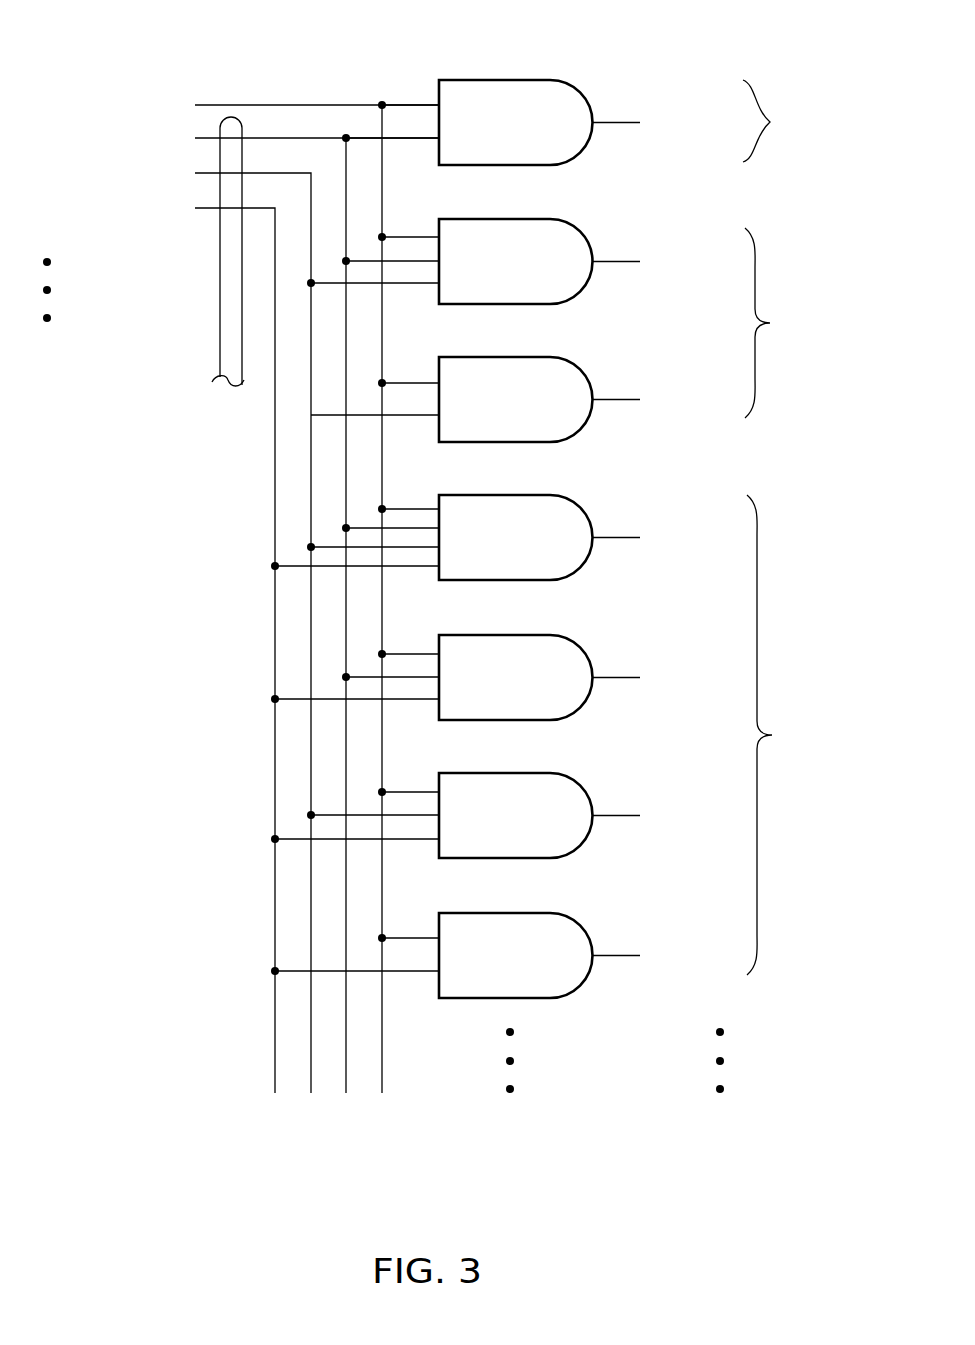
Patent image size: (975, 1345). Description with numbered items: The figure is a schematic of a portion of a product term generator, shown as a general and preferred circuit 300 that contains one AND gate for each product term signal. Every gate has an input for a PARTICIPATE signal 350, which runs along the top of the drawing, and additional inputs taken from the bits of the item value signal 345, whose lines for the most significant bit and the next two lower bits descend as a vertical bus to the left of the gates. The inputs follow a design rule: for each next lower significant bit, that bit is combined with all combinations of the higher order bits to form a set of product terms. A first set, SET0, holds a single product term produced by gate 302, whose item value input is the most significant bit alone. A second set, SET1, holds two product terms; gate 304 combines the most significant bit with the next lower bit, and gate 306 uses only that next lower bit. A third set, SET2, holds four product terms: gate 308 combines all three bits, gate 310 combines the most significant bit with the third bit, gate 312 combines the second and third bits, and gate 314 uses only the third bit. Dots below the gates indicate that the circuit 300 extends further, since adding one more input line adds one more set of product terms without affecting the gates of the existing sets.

The product term generator circuit 300 is at (198, 54).
The AND gate 302 is at (518, 129).
The AND gate 304 is at (518, 268).
The AND gate 306 is at (518, 406).
The AND gate 308 is at (518, 544).
The AND gate 310 is at (518, 684).
The AND gate 312 is at (518, 822).
The AND gate 314 is at (518, 962).
The item value signal 345 is at (220, 385).
The PARTICIPATE signal 350 is at (262, 105).